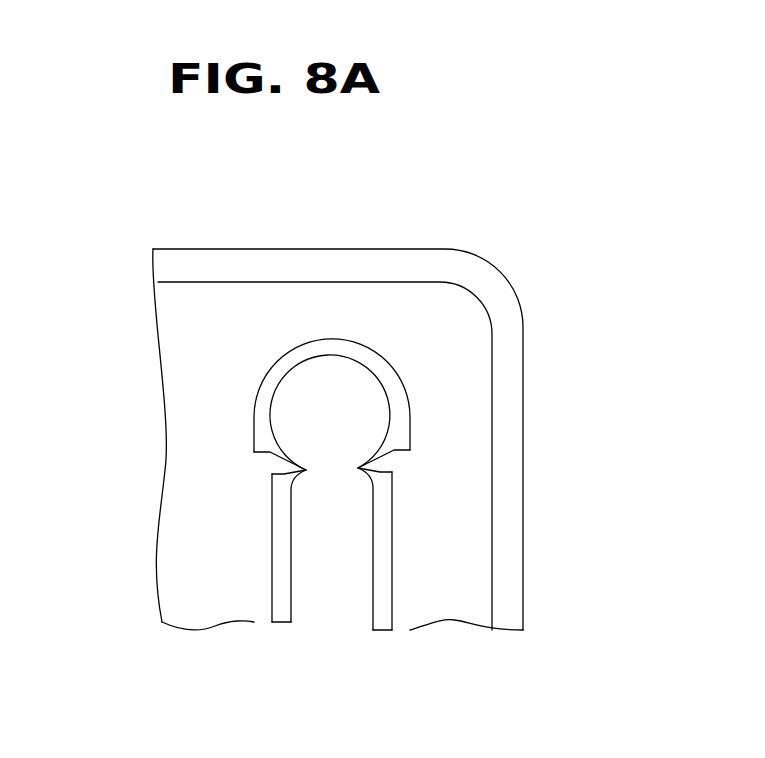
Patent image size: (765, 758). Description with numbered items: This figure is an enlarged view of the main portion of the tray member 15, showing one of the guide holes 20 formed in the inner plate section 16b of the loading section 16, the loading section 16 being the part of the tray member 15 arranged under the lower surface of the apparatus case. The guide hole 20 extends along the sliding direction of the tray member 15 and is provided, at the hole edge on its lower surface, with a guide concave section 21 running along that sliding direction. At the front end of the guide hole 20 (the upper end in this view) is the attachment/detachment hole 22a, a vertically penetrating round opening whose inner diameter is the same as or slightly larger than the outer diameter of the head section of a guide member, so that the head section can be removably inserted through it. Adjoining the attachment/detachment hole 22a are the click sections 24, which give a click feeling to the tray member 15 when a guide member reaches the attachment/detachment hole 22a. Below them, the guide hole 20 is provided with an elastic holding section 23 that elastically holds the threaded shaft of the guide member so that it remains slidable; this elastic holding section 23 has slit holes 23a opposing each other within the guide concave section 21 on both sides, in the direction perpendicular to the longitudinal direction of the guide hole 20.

The tray member 15 is at (188, 230).
The loading section 16 is at (420, 272).
The inner plate section 16b is at (265, 307).
The attachment/detachment hole 22a is at (327, 382).
The click section 24 is at (302, 466).
The guide concave section 21 is at (283, 532).
The guide hole 20 is at (327, 515).
The slit hole 23a is at (262, 577).
The elastic holding section 23 is at (370, 580).